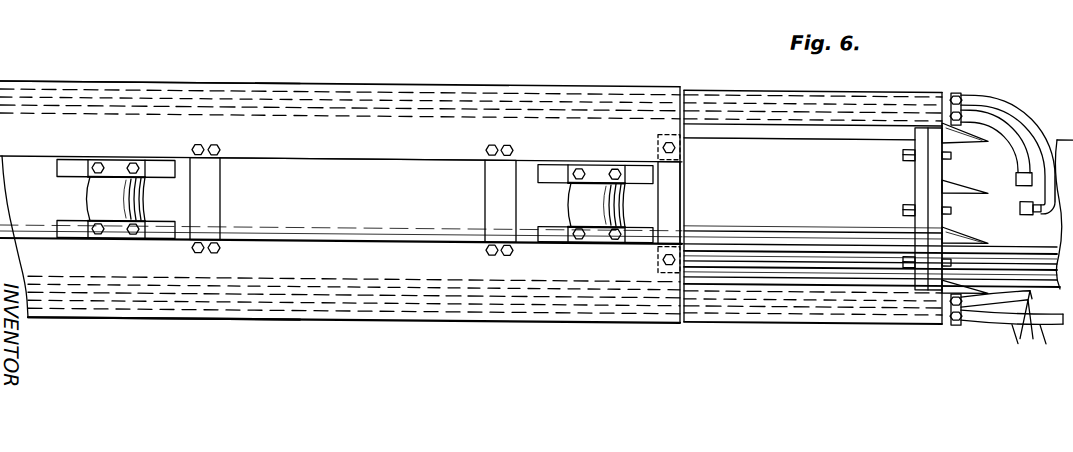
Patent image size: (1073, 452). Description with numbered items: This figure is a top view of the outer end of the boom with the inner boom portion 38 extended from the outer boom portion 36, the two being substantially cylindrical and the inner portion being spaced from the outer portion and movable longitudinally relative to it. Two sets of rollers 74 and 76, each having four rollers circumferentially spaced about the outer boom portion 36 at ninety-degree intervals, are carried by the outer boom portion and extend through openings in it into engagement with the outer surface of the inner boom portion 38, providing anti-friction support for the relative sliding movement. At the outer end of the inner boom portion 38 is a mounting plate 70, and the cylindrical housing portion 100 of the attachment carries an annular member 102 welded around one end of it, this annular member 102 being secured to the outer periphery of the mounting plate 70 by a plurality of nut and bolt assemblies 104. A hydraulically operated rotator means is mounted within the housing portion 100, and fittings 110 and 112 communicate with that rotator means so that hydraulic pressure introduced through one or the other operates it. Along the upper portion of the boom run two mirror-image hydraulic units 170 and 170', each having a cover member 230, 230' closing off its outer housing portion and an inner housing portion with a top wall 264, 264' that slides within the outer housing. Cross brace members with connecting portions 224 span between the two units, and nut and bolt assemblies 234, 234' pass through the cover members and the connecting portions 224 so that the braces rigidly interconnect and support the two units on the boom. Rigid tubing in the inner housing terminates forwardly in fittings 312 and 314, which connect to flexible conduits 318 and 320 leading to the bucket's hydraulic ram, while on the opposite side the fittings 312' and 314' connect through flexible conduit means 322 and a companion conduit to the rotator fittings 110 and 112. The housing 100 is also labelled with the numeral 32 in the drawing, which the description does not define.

The outer conduit 32 is at (1033, 112).
The outer boom portion 36 is at (408, 197).
The inner boom portion 38 is at (841, 196).
The mounting plate 70 is at (915, 177).
The set of rollers 74 is at (76, 198).
The set of rollers 76 is at (640, 196).
The cylindrical housing portion 100 is at (1053, 245).
The annular member 102 is at (942, 180).
The nut and bolt assemblies 104 is at (951, 148).
The fitting 110 is at (1014, 176).
The fitting 112 is at (962, 240).
The hydraulic unit 170 is at (354, 326).
The hydraulic unit 170' is at (340, 71).
The connecting portion 224 is at (210, 194).
The cover member 230 is at (164, 333).
The cover member 230' is at (150, 61).
The nut and bolt assemblies 234 is at (412, 261).
The nut and bolt assemblies 234' is at (436, 141).
The top wall 264 is at (813, 327).
The top wall 264' is at (813, 95).
The fitting 312 is at (964, 334).
The fitting 312' is at (982, 92).
The fitting 314 is at (997, 325).
The fitting 314' is at (1004, 125).
The flexible conduit 318 is at (1023, 320).
The flexible conduit 320 is at (1044, 335).
The flexible conduit means 322 is at (1010, 113).